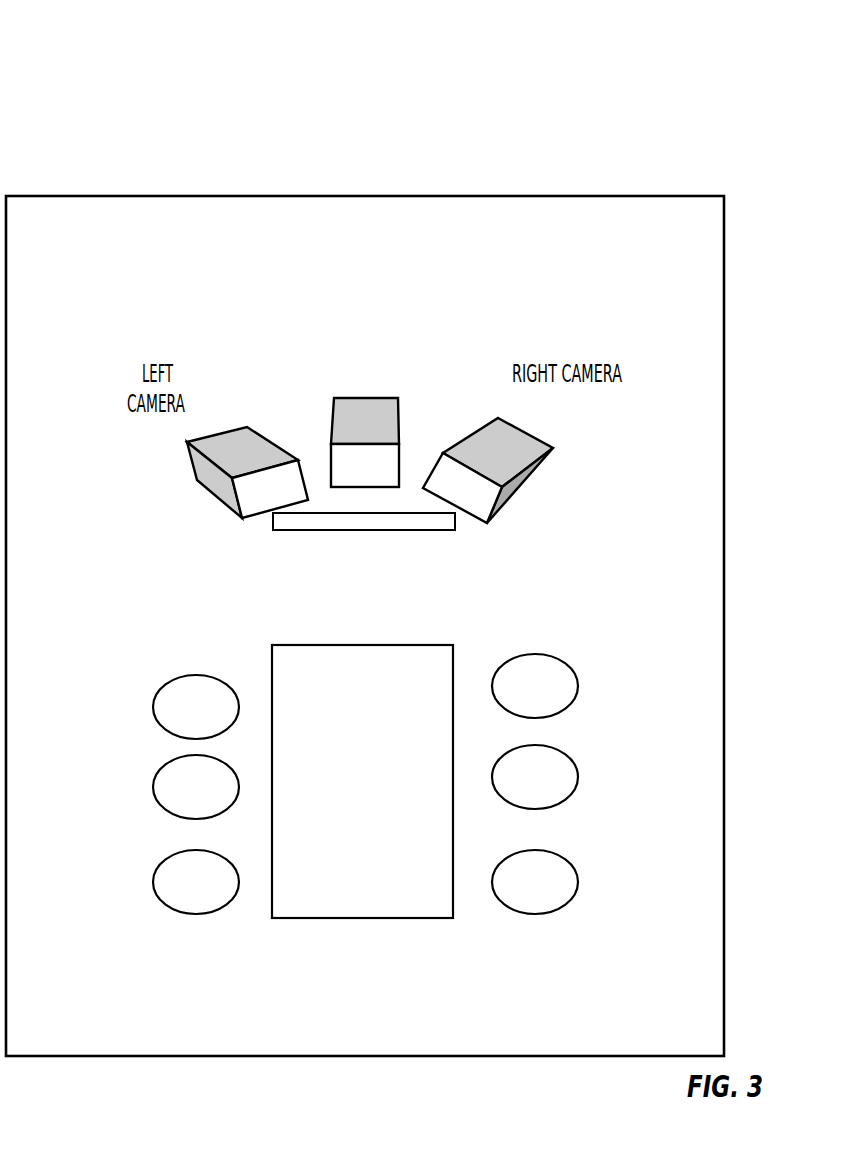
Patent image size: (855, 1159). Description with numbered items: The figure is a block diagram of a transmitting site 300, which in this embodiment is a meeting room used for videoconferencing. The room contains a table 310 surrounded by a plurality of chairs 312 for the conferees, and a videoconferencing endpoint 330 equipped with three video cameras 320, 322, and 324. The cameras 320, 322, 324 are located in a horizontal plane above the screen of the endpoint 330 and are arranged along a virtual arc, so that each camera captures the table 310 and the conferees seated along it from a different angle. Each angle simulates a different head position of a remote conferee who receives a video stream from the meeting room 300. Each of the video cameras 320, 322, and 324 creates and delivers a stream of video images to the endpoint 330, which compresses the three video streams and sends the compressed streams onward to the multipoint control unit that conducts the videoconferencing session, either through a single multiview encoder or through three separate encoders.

The transmitting site 300 is at (365, 532).
The table 310 is at (362, 811).
The chairs 312 is at (315, 784).
The video camera 320 is at (233, 490).
The video camera 322 is at (330, 438).
The video camera 324 is at (506, 486).
The videoconferencing endpoint 330 is at (362, 556).